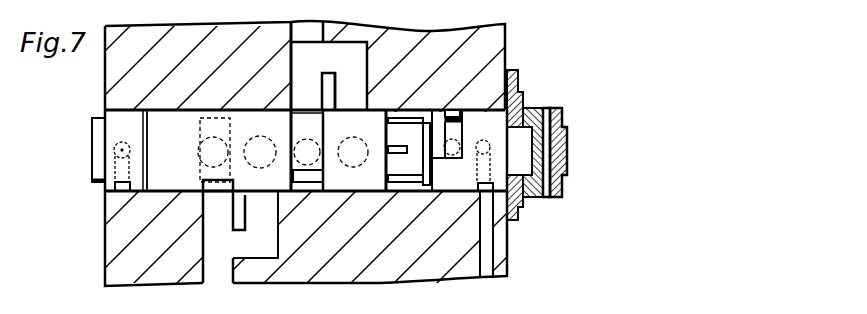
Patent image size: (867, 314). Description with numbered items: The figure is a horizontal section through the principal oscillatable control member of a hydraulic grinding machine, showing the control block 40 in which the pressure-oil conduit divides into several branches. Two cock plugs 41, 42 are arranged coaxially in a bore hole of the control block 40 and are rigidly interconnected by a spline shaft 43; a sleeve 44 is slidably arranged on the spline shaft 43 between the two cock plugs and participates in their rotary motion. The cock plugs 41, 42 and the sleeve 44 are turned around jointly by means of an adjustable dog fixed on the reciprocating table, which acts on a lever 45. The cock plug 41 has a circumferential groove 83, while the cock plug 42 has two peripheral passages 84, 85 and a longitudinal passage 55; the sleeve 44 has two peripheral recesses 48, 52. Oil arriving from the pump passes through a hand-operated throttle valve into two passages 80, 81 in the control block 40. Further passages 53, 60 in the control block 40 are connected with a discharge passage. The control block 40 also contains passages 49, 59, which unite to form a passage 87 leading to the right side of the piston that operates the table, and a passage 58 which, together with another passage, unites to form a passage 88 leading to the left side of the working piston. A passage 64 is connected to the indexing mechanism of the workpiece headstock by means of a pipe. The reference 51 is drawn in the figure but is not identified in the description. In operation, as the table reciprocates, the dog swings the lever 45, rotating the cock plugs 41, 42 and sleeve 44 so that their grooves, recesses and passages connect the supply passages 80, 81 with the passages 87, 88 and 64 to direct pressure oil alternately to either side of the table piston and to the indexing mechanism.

The control block 40 is at (501, 33).
The cock plug 41 is at (130, 150).
The cock plug 42 is at (488, 157).
The spline shaft 43 is at (410, 150).
The sleeve 44 is at (201, 135).
The lever 45 is at (531, 108).
The peripheral recess 48 is at (297, 121).
The passage 49 is at (316, 91).
The hook 51 is at (229, 216).
The peripheral recess 52 is at (218, 184).
The passage 53 is at (214, 150).
The longitudinal passage 55 is at (436, 158).
The passage 58 is at (256, 224).
The passage 59 is at (350, 91).
The passage 60 is at (362, 150).
The passage 64 is at (474, 234).
The passage 80 is at (260, 152).
The passage 81 is at (308, 150).
The circumferential groove 83 is at (121, 191).
The peripheral passage 84 is at (449, 134).
The peripheral passage 85 is at (481, 224).
The passage 87 is at (329, 66).
The passage 88 is at (235, 280).